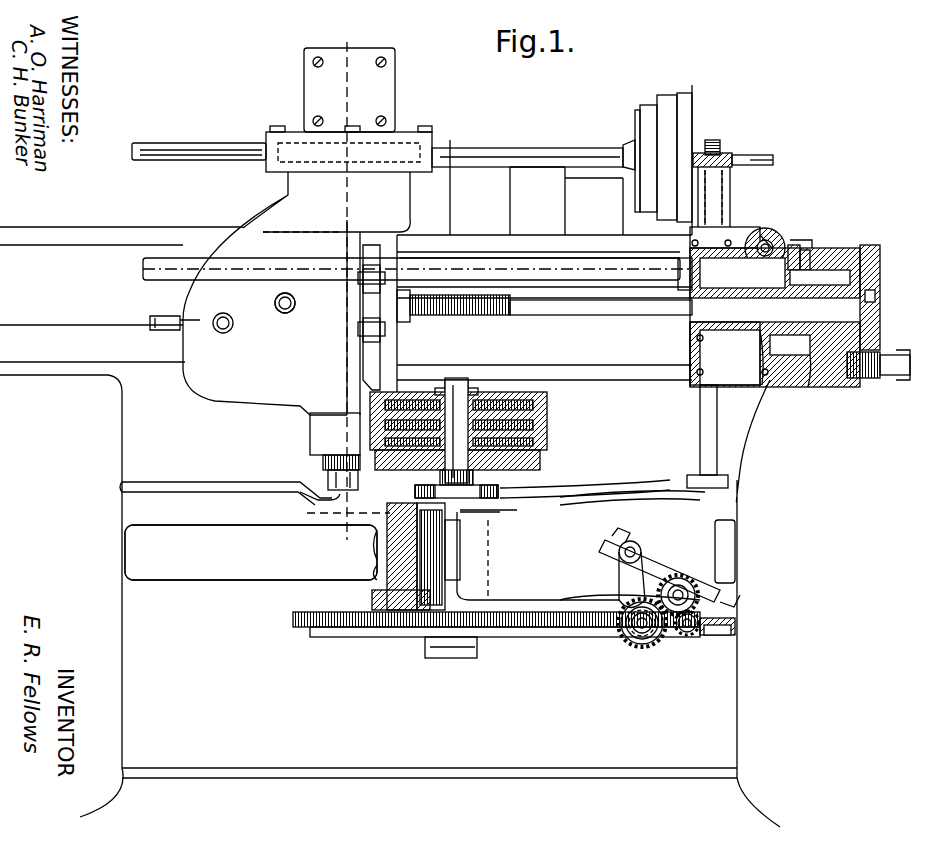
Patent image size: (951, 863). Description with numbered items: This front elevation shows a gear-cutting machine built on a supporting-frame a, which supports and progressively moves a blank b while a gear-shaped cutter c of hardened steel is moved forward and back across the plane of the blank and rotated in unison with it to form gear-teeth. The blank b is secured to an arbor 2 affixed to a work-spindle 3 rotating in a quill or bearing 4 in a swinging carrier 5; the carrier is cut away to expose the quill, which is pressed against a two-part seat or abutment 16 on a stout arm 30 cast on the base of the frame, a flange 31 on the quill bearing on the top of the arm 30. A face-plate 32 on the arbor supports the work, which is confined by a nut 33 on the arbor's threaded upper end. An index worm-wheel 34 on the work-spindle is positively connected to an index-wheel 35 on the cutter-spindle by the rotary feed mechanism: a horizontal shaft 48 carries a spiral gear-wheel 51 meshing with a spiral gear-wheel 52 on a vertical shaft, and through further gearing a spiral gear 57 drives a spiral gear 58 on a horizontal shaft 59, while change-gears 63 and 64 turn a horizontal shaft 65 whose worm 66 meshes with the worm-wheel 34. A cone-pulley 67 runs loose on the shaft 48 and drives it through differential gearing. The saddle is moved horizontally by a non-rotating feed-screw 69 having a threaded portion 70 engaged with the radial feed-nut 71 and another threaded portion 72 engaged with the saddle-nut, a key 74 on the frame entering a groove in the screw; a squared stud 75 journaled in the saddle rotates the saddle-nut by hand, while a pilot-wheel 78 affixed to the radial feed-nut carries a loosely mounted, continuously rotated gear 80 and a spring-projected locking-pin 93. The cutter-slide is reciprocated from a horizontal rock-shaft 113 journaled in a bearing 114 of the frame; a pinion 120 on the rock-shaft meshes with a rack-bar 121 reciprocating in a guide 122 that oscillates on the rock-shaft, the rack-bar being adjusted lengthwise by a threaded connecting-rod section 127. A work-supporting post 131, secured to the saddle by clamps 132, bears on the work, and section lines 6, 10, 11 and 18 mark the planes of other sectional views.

The supporting-frame a is at (390, 527).
The blank b is at (550, 410).
The gear-shaped cutter c is at (325, 463).
The arbor 2 is at (428, 390).
The work-spindle 3 is at (437, 580).
The quill or bearing 4 is at (325, 509).
The carrier 5 is at (582, 590).
The section line 6 6 is at (390, 494).
The section line 10 10 is at (349, 290).
The section line 11 11 is at (142, 268).
The seat or abutment 16 is at (375, 565).
The section line 18 18 is at (210, 303).
The stout arm 30 is at (375, 550).
The flange 31 is at (500, 492).
The face-plate 32 is at (500, 480).
The nut 33 is at (455, 380).
The index worm-wheel 34 is at (545, 640).
The index-wheel 35 is at (410, 145).
The horizontal shaft 48 is at (528, 150).
The spiral gear-wheel 51 is at (722, 140).
The spiral gear-wheel 52 is at (735, 160).
The spiral gear 57 is at (730, 628).
The spiral gear 58 is at (690, 638).
The horizontal shaft 59 is at (700, 620).
The gear 63 is at (680, 575).
The gear 64 is at (645, 655).
The horizontal shaft 65 is at (635, 640).
The worm 66 is at (620, 600).
The cone-pulley 67 is at (640, 120).
The feed-screw 69 is at (615, 315).
The threaded portion 70 is at (768, 387).
The radial feed-nut 71 is at (805, 355).
The threaded portion 72 is at (490, 315).
The key 74 is at (720, 322).
The stud or shank 75 is at (295, 300).
The pilot-wheel 78 is at (885, 290).
The gear 80 is at (880, 275).
The locking-pin 93 is at (850, 372).
The rock-shaft 113 is at (510, 265).
The bearing 114 is at (680, 262).
The pinion 120 is at (740, 245).
The rack-bar 121 is at (805, 255).
The guide 122 is at (795, 248).
The connecting-rod section 127 is at (772, 246).
The work-supporting post or bar 131 is at (370, 360).
The clamps 132 is at (362, 330).